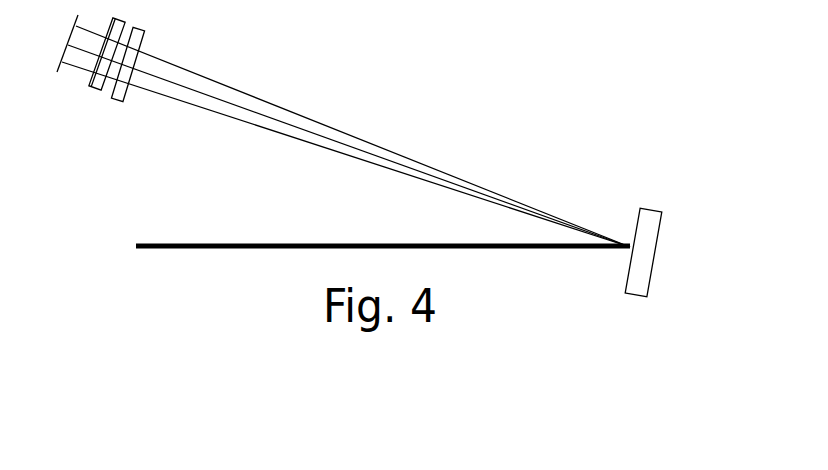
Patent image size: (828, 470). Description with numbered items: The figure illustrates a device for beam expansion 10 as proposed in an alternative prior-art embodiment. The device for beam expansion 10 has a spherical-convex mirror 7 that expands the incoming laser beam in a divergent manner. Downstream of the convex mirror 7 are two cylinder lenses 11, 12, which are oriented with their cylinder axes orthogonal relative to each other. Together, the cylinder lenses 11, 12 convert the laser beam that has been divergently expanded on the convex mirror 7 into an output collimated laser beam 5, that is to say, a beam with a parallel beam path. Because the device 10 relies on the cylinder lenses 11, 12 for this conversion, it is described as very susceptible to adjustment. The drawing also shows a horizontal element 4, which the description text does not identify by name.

The output collimated laser beam 5 is at (76, 63).
The cylinder lens 12 is at (89, 90).
The cylinder lens 11 is at (112, 103).
The device for beam expansion 10 is at (553, 178).
The spherical-convex mirror 7 is at (643, 250).
The sample surface 4 is at (177, 250).